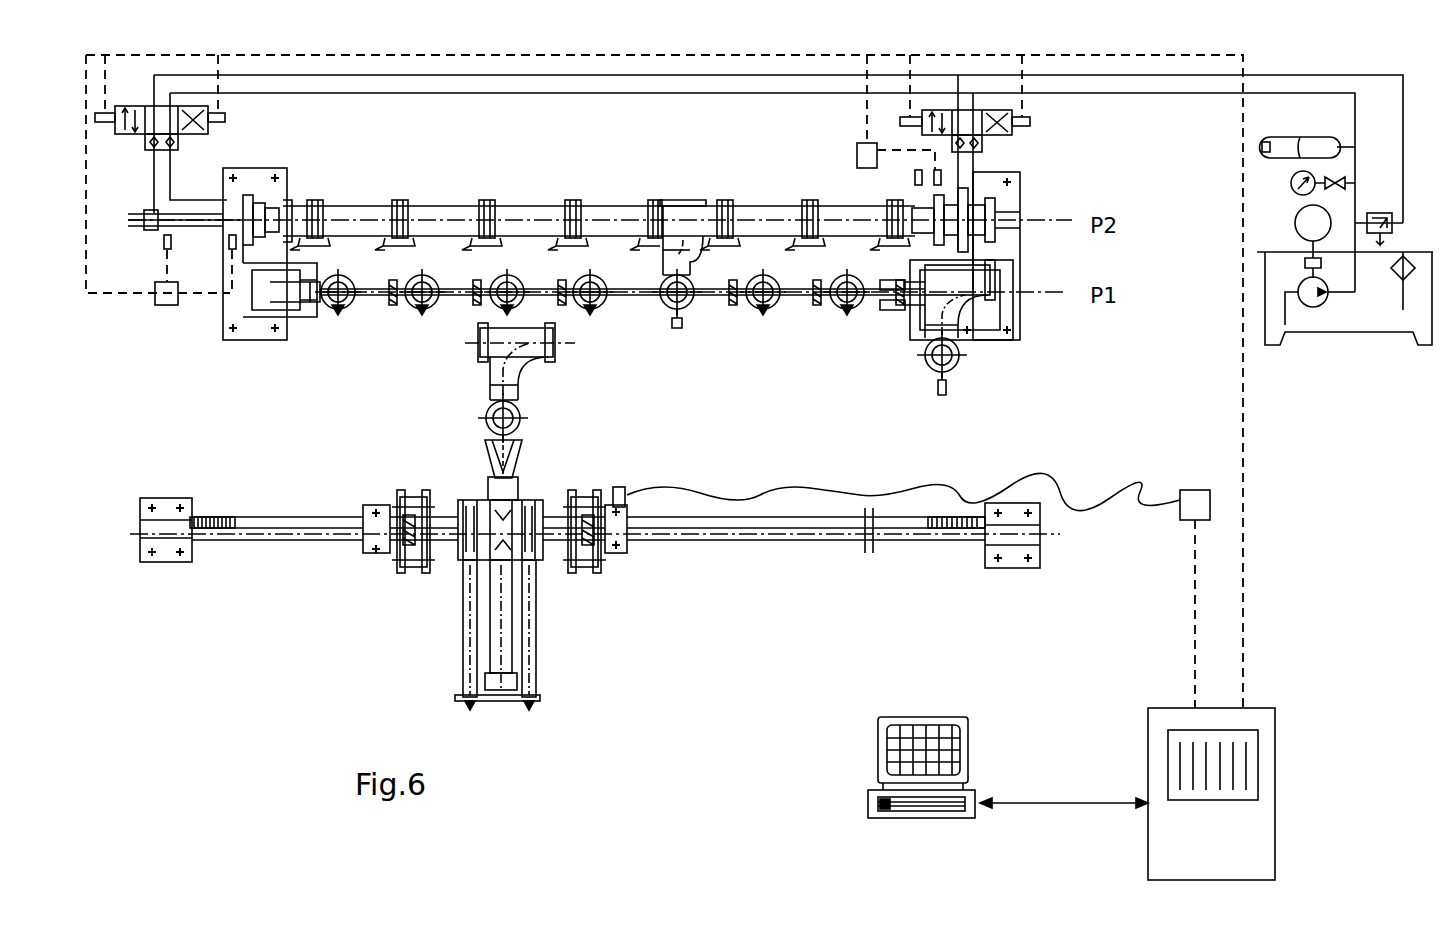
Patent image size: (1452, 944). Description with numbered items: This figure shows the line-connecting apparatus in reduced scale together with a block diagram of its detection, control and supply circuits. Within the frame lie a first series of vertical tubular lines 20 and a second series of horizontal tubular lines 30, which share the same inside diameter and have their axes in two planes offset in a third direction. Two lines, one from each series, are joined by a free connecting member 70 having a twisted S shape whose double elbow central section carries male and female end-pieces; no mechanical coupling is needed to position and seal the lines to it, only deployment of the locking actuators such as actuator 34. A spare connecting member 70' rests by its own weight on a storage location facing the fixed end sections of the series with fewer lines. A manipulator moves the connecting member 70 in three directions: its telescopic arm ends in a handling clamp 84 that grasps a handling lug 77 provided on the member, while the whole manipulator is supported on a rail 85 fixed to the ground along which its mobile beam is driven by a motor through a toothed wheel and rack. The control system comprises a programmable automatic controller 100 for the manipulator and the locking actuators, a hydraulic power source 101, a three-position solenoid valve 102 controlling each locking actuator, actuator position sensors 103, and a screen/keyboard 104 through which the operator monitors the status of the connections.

The vertical tubular lines 20 is at (407, 302).
The horizontal tubular lines 30 is at (522, 192).
The actuator 34 is at (262, 200).
The connecting member 70 is at (556, 294).
The connecting member in storage location 70' is at (956, 337).
The handling lug 77 is at (684, 330).
The handling clamp 84 is at (525, 462).
The rail 85 is at (792, 543).
The programmable automatic controller 100 is at (1275, 708).
The hydraulic power source 101 is at (1340, 355).
The three-position solenoid valve 102 is at (1022, 146).
The actuator position sensors 103 is at (229, 243).
The screen/keyboard 104 is at (965, 745).